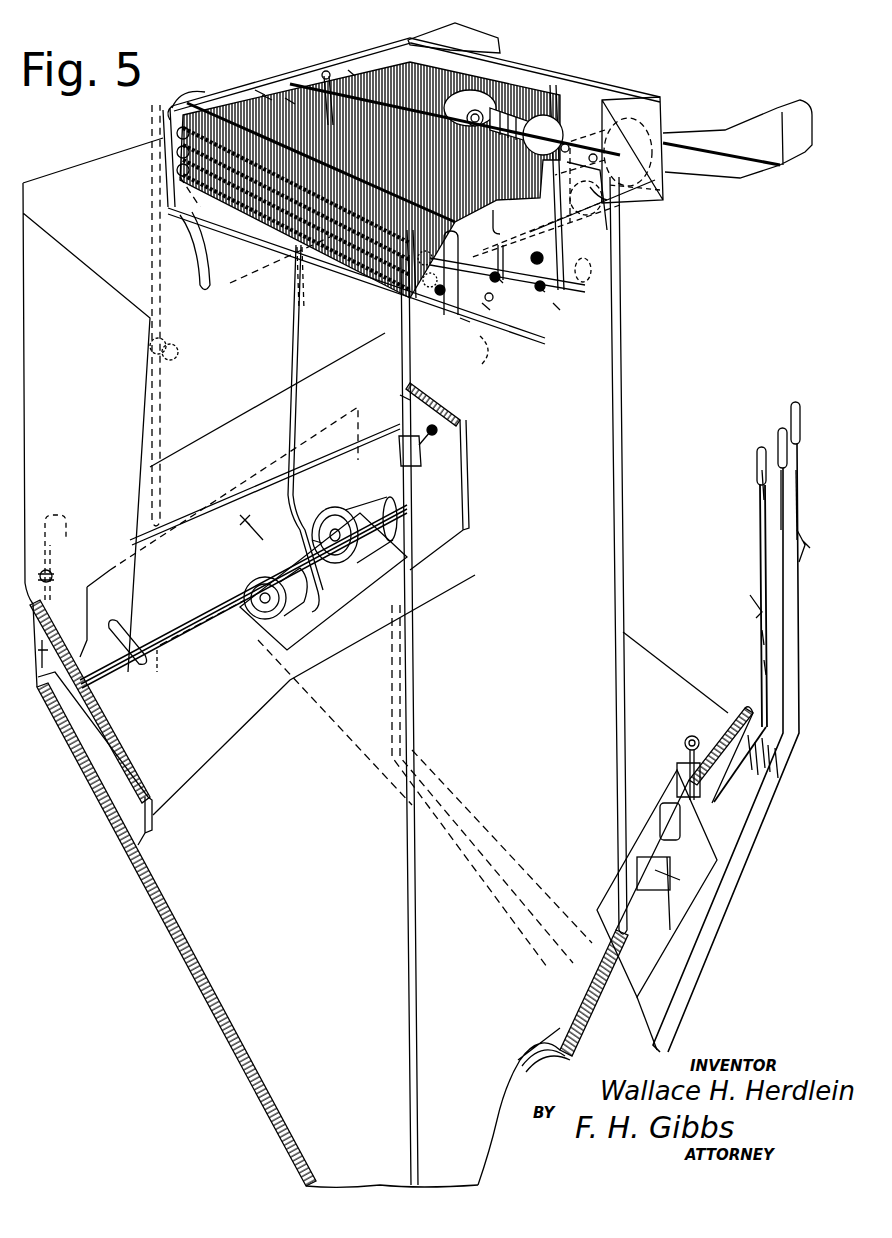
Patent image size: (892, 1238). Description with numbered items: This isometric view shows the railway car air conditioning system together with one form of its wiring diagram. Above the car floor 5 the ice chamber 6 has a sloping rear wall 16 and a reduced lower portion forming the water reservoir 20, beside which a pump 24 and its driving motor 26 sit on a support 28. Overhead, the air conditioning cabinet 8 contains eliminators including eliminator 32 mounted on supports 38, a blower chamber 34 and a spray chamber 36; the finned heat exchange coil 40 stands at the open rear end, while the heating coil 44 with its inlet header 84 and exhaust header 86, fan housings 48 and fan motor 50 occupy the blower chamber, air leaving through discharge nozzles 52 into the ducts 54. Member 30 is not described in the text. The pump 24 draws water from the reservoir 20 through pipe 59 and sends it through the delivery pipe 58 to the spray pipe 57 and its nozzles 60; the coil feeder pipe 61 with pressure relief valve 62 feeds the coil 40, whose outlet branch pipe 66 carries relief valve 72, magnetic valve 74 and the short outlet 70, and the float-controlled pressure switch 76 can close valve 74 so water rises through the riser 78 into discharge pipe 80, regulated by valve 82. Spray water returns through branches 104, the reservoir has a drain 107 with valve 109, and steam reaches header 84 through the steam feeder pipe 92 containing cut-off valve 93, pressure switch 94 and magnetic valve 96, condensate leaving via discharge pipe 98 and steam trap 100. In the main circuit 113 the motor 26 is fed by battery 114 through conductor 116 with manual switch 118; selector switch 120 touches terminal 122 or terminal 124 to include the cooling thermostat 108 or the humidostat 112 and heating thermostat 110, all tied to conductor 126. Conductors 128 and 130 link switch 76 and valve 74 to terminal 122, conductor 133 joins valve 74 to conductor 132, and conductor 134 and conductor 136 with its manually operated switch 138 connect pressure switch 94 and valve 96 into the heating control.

The floor 5 is at (215, 957).
The ice chamber 6 is at (94, 176).
The air conditioning cabinet 8 is at (645, 118).
The rear wall 16 is at (180, 418).
The water tank or reservoir 20 is at (40, 640).
The pump 24 is at (272, 622).
The driving motor 26 is at (350, 560).
The support 28 is at (325, 585).
The frame rail 30 is at (205, 75).
The eliminator 32 is at (290, 100).
The blower chamber 34 is at (543, 98).
The spray chamber 36 is at (260, 92).
The supports 38 is at (483, 364).
The heat exchange coil 40 is at (283, 230).
The heating coil 44 is at (350, 72).
The fan housings 48 is at (466, 90).
The motor 50 is at (505, 110).
The discharge nozzles 52 is at (667, 195).
The ducts 54 is at (455, 35).
The spray pipe 57 is at (267, 98).
The delivery pipe 58 is at (499, 232).
The pipe 59 is at (262, 586).
The nozzles 60 is at (605, 200).
The coil feeder pipe 61 is at (487, 307).
The pressure relief valve 62 is at (557, 307).
The branch pipe 66 is at (500, 280).
The outlet 70 is at (470, 322).
The pressure relief valve 72 is at (540, 290).
The magnetic valve 74 is at (458, 330).
The float-controlled pressure switch 76 is at (158, 657).
The riser 78 is at (403, 293).
The discharge pipe 80 is at (420, 388).
The valve 82 is at (421, 455).
The inlet header 84 is at (566, 143).
The exhaust header 86 is at (326, 72).
The steam feeder pipe 92 is at (614, 420).
The cut-off valve 93 is at (696, 805).
The pressure switch 94 is at (670, 878).
The magnetic valve 96 is at (680, 825).
The discharge pipe 98 is at (162, 404).
The steam trap 100 is at (178, 344).
The branches 104 is at (200, 266).
The drain 107 is at (68, 526).
The cooling thermostat 108 is at (780, 432).
The valve 109 is at (84, 684).
The heating thermostat 110 is at (758, 456).
The humidostat 112 is at (793, 405).
The main circuit 113 is at (470, 813).
The battery 114 is at (757, 777).
The conductor 116 is at (764, 820).
The manual switch 118 is at (800, 548).
The selector switch 120 is at (794, 458).
The terminal 122 is at (781, 468).
The terminal 124 is at (758, 486).
The conductor 126 is at (764, 667).
The conductor 128 is at (262, 405).
The conductor 130 is at (360, 750).
The conductor 132 is at (660, 955).
The conductor 133 is at (400, 398).
The conductor 134 is at (670, 907).
The conductor 136 is at (762, 637).
The manually operated switch 138 is at (758, 614).